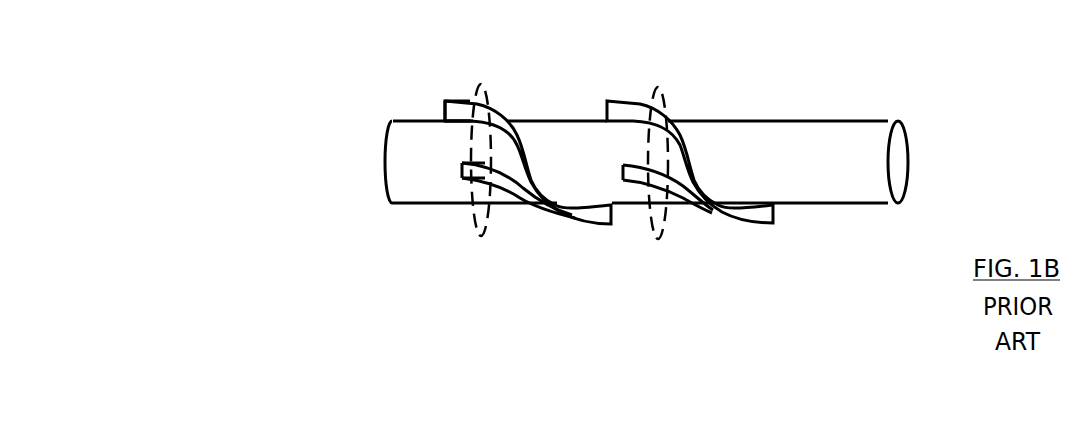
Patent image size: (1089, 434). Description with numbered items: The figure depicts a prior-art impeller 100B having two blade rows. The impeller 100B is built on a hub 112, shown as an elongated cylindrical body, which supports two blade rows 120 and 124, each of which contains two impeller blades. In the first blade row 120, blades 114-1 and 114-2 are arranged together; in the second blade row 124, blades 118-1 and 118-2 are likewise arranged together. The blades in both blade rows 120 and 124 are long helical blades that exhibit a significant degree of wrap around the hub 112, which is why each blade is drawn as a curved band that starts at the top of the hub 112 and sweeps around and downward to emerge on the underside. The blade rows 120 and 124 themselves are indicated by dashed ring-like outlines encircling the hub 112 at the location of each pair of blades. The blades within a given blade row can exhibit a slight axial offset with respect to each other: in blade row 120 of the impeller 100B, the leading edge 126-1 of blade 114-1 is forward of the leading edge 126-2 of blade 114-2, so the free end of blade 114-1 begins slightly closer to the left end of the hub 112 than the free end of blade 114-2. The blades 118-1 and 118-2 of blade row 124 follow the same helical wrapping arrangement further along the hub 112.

The impeller 100B is at (242, 121).
The hub 112 is at (842, 174).
The blade 114-1 is at (498, 130).
The blade 114-2 is at (508, 183).
The leading edge 126-1 is at (445, 102).
The leading edge 126-2 is at (460, 170).
The blade row 120 is at (482, 232).
The blade 118-1 is at (618, 112).
The blade 118-2 is at (633, 173).
The blade row 124 is at (663, 228).